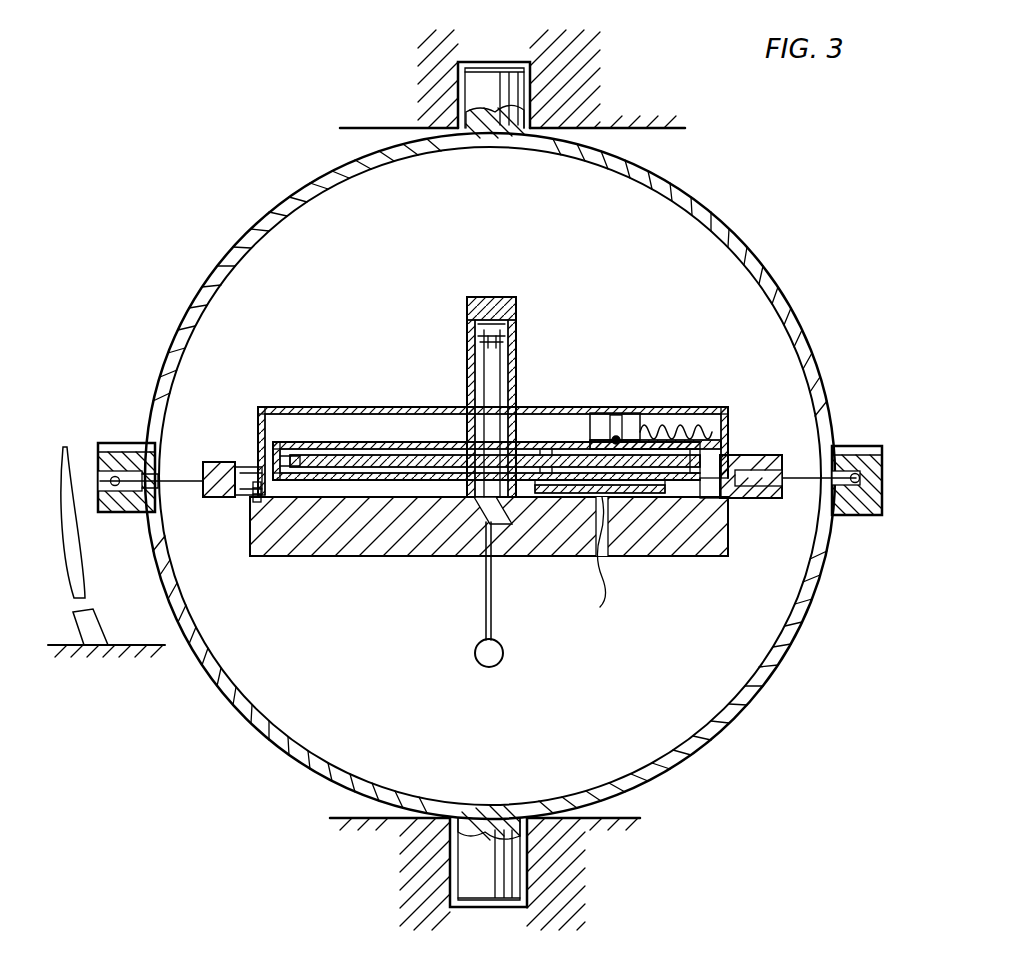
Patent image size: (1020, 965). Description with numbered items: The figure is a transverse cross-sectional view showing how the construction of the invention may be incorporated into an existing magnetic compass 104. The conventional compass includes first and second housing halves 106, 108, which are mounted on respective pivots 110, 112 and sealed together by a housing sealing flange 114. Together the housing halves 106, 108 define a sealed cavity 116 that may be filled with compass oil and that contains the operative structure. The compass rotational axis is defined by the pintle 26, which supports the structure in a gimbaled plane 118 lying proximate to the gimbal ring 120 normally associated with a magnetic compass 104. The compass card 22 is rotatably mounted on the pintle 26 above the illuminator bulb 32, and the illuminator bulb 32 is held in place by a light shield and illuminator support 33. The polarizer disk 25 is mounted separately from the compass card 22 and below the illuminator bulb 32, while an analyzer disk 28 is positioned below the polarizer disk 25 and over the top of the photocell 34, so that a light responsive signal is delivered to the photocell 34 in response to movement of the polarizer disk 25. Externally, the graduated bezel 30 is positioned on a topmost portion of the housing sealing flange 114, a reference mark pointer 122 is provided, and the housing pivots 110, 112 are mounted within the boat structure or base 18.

The base 18 is at (650, 126).
The compass card 22 is at (365, 406).
The polarizer disk 25 is at (330, 464).
The pintle 26 is at (513, 325).
The analyzer disk 28 is at (726, 543).
The graduated bezel 30 is at (108, 441).
The illuminator bulb 32 is at (612, 412).
The light shield and illuminator support 33 is at (560, 440).
The photocell 34 is at (632, 497).
The magnetic compass 104 is at (722, 218).
The first housing half 106 is at (818, 375).
The second housing half 108 is at (800, 640).
The pivot 110 is at (530, 82).
The pivot 112 is at (505, 868).
The housing sealing flange 114 is at (884, 469).
The sealed cavity 116 is at (368, 727).
The gimbaled plane 118 is at (365, 557).
The gimbal ring 120 is at (218, 461).
The reference mark pointer 122 is at (86, 594).